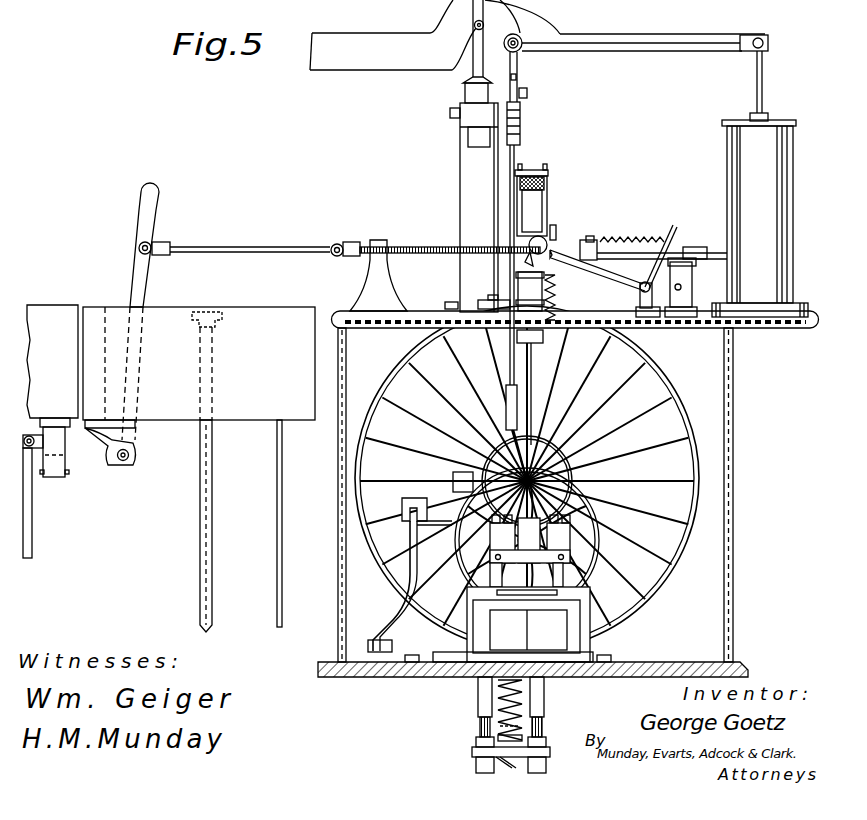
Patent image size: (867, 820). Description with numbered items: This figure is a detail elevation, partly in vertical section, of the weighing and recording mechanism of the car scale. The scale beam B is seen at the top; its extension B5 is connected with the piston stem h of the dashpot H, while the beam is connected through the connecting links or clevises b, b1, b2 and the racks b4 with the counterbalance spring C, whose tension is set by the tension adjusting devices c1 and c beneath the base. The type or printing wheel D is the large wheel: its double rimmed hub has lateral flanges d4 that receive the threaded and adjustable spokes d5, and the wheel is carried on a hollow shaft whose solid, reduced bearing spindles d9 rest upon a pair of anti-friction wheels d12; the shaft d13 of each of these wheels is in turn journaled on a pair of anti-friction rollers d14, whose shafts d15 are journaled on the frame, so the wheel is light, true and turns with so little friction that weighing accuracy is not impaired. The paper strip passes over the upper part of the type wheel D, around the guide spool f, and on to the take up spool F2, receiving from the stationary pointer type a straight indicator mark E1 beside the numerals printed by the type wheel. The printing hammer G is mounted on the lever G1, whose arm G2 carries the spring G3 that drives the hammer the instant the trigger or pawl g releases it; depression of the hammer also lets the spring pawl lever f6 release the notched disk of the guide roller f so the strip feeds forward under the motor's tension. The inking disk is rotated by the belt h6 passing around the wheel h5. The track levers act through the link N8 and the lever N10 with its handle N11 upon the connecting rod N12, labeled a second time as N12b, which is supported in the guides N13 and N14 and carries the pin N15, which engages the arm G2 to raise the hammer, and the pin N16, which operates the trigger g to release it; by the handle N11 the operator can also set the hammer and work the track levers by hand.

The type or printing wheel D is at (672, 392).
The lateral flanges d4 is at (585, 410).
The threaded and adjustable spokes d5 is at (396, 386).
The bearing spindles d9 is at (567, 394).
The anti-friction wheels d12 is at (440, 480).
The shaft of anti-friction wheel d13 is at (592, 500).
The anti-friction wheels or rollers d14 is at (580, 545).
The shafts of anti-friction rollers d15 is at (590, 560).
The indicator mark E1 is at (535, 387).
The scale beam B is at (435, 38).
The extension of scale beam B5 is at (695, 44).
The piston stem h is at (764, 88).
The dashpot H is at (760, 218).
The connecting link or clevis b is at (520, 75).
The connecting link or clevis b1 is at (522, 120).
The connecting link or clevis b2 is at (518, 162).
The racks b4 is at (505, 425).
The take up spool F2 is at (540, 195).
The printing hammer G is at (530, 240).
The printing hammer lever G1 is at (606, 277).
The arm of printing hammer lever G2 is at (676, 226).
The spring G3 is at (618, 240).
The trigger or pawl g is at (672, 262).
The link N8 is at (32, 545).
The lever N10 is at (70, 448).
The handle N11 is at (140, 195).
The connecting rod N12 is at (242, 245).
The pin N12b is at (720, 256).
The guide N13 is at (372, 262).
The guide N14 is at (591, 236).
The pin or projection N15 is at (655, 238).
The pin or projection N16 is at (706, 245).
The guide spool f is at (516, 290).
The spring pawl lever f6 is at (558, 285).
The wheel h5 is at (488, 298).
The belt h6 is at (450, 301).
The counterbalance spring C is at (520, 696).
The tension adjusting device c1 is at (498, 728).
The tension adjusting device c is at (508, 762).